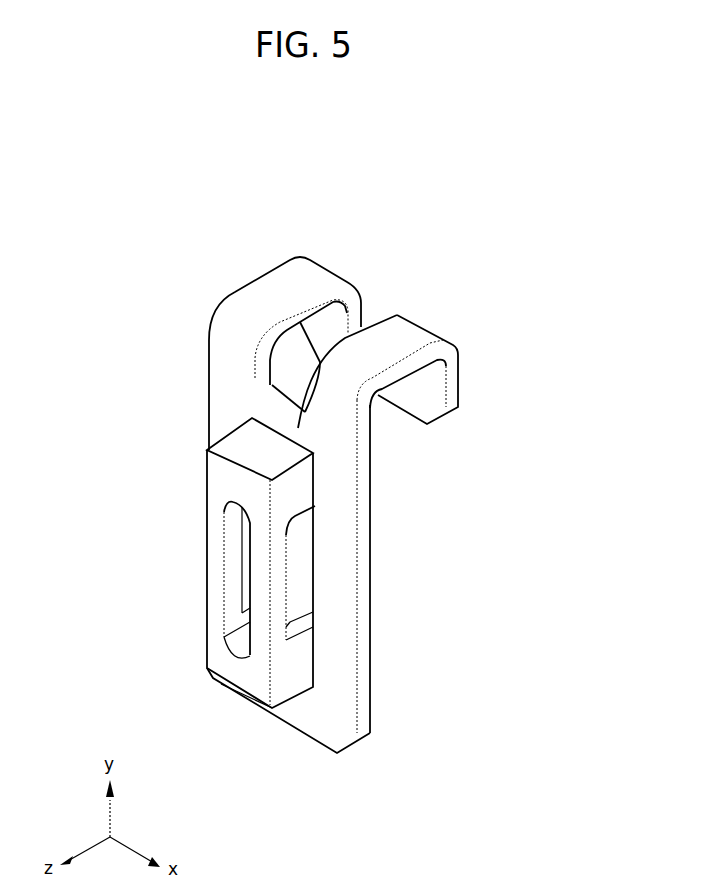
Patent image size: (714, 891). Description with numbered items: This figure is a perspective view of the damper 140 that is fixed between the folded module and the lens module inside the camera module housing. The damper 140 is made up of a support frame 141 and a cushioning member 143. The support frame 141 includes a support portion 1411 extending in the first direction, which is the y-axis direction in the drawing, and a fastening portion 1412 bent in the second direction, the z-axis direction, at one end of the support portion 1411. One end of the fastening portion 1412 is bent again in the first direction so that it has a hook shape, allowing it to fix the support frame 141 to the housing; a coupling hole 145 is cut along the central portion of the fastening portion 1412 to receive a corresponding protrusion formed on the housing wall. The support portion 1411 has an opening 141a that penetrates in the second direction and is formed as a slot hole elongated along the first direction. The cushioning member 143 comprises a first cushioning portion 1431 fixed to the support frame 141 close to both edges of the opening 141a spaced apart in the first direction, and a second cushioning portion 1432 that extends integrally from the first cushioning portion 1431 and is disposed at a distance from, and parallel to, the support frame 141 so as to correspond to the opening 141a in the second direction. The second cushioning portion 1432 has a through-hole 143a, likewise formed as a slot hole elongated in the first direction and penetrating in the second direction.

The damper 140 is at (188, 298).
The support frame 141 is at (477, 509).
The support portion 1411 is at (449, 566).
The fastening portion 1412 is at (412, 357).
The opening 141a is at (297, 578).
The cushioning member 143 is at (244, 560).
The first cushioning portion 1431 is at (243, 435).
The second cushioning portion 1432 is at (270, 579).
The through-hole 143a is at (238, 570).
The coupling hole 145 is at (328, 318).